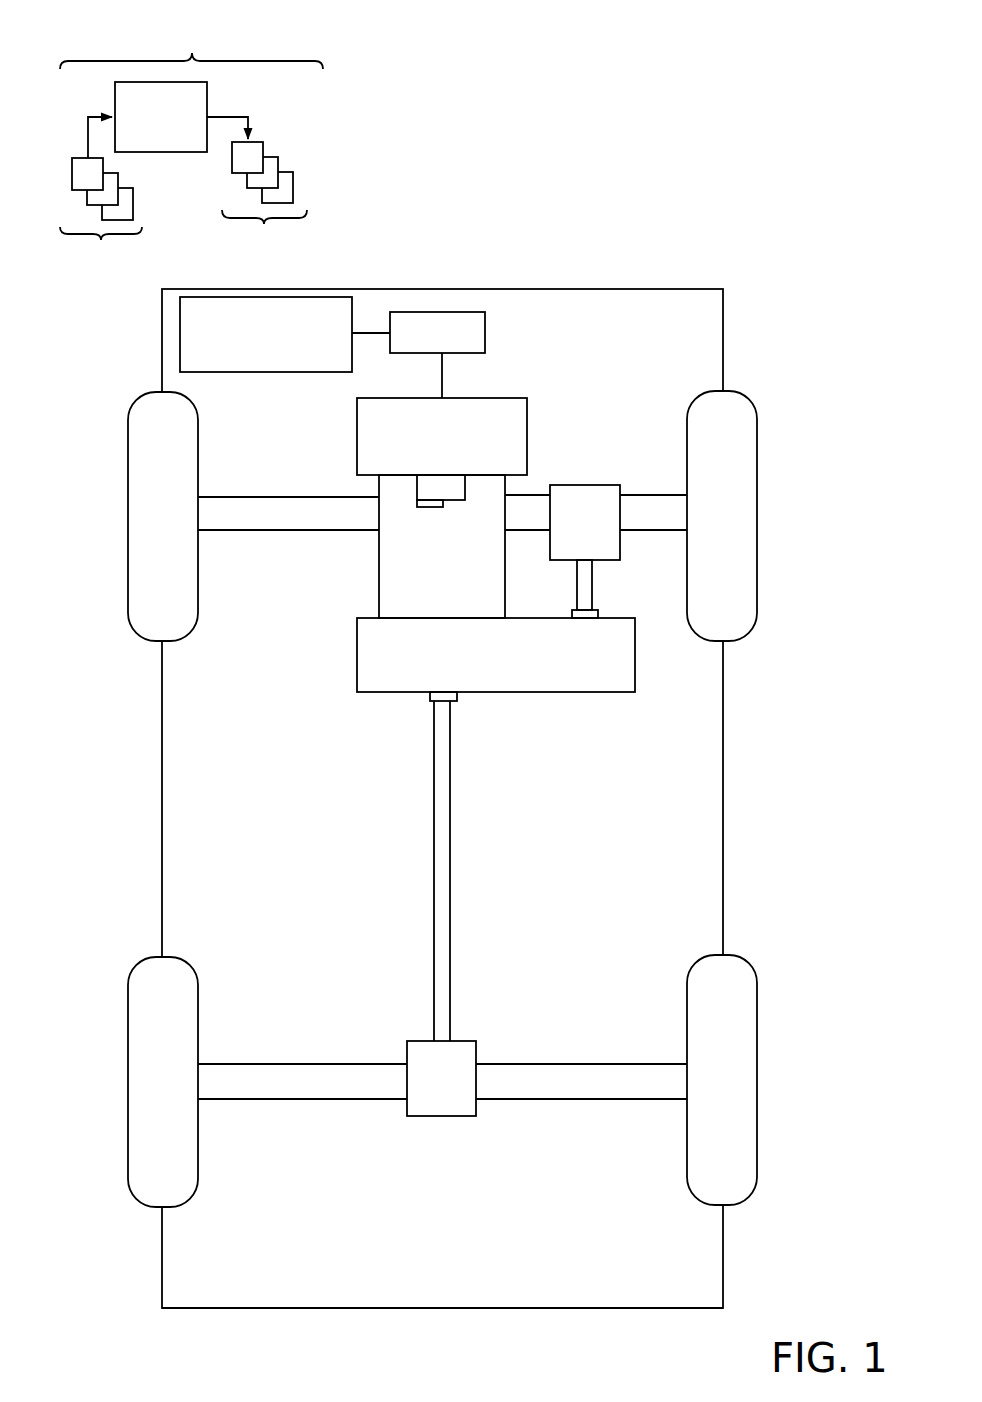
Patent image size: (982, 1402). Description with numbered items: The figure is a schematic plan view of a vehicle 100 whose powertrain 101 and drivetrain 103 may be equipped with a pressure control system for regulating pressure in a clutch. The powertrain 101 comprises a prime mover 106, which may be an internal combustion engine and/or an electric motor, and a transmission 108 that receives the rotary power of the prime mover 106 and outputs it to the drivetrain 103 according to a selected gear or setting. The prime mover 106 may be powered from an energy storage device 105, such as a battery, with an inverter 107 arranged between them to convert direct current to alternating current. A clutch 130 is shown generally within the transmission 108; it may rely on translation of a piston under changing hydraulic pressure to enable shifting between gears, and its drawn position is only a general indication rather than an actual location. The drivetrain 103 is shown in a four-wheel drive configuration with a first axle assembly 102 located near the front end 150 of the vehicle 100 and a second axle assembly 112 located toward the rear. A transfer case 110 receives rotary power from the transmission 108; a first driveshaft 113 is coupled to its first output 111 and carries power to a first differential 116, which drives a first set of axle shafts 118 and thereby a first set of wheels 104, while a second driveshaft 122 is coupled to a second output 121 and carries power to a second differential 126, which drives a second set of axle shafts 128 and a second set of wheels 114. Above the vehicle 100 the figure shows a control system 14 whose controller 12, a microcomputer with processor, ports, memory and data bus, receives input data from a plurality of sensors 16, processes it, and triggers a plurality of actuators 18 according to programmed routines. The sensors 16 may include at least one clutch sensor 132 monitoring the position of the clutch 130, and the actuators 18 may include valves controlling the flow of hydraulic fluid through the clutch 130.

The controller 12 is at (161, 117).
The control system 14 is at (191, 145).
The sensors 16 is at (101, 201).
The actuators 18 is at (257, 192).
The vehicle 100 is at (726, 71).
The powertrain 101 is at (553, 356).
The first axle assembly 102 is at (568, 448).
The drivetrain 103 is at (318, 569).
The first set of wheels 104 is at (133, 400).
The energy storage device 105 is at (266, 334).
The prime mover 106 is at (442, 436).
The inverter 107 is at (437, 332).
The transmission 108 is at (442, 546).
The transfer case 110 is at (496, 655).
The first output 111 is at (598, 614).
The second axle assembly 112 is at (510, 999).
The first driveshaft 113 is at (594, 596).
The second set of wheels 114 is at (138, 960).
The first differential 116 is at (585, 522).
The first set of axle shafts 118 is at (273, 496).
The second output 121 is at (458, 695).
The second driveshaft 122 is at (452, 898).
The second differential 126 is at (441, 1078).
The second set of axle shafts 128 is at (623, 1063).
The clutch 130 is at (466, 497).
The clutch sensor 132 is at (423, 509).
The front end 150 is at (494, 260).